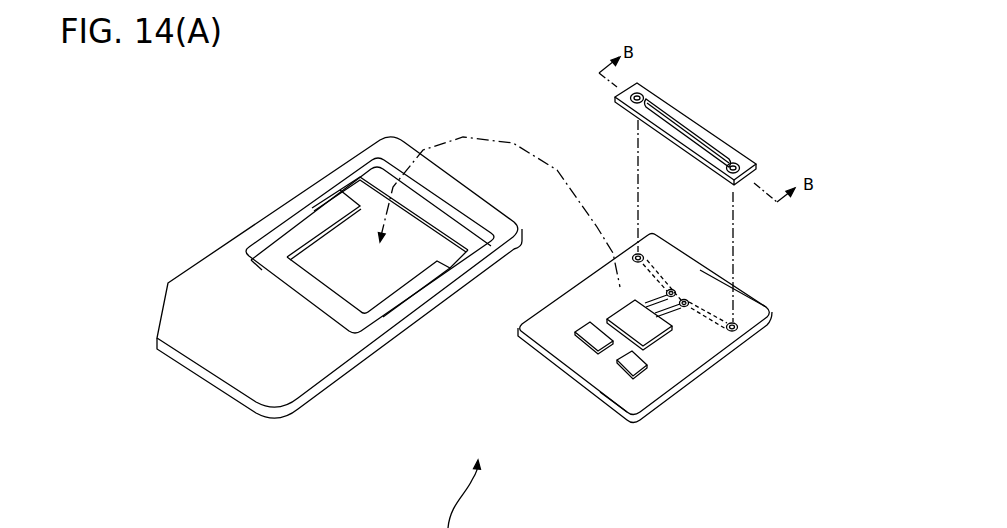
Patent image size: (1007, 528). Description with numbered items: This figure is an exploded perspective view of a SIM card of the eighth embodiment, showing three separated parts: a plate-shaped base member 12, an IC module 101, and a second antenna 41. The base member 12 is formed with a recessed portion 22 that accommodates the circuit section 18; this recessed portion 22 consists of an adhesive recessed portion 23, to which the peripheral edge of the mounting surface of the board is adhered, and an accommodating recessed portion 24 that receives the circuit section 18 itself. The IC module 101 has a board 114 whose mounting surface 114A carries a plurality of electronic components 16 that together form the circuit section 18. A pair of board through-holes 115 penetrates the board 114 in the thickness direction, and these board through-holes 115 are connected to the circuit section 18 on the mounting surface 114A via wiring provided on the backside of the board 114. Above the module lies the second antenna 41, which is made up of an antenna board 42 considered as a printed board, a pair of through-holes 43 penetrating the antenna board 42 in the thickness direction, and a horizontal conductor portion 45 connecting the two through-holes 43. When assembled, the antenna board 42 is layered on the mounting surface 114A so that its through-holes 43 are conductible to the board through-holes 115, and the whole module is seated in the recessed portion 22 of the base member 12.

The base member 12 is at (380, 357).
The recessed portion 22 is at (341, 216).
The adhesive recessed portion 23 is at (325, 212).
The accommodating recessed portion 24 is at (337, 258).
The second antenna 41 is at (701, 128).
The antenna board 42 is at (713, 145).
The through-holes 43 is at (641, 95).
The conductor portion 45 is at (667, 118).
The IC module 101 is at (707, 387).
The board 114 is at (745, 301).
The mounting surface 114A is at (634, 396).
The board through-holes 115 is at (643, 255).
The electronic components 16 is at (623, 365).
The circuit section 18 is at (647, 380).